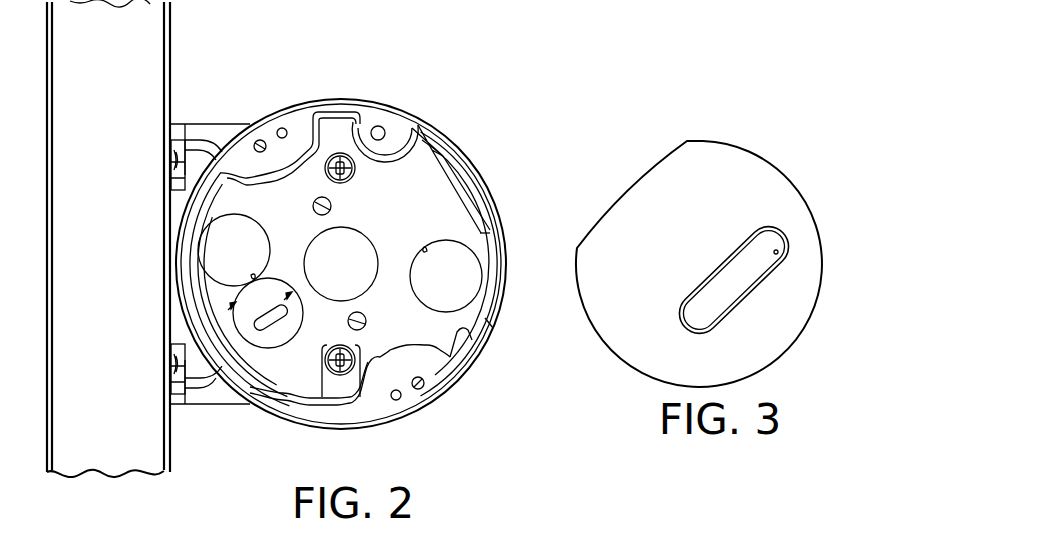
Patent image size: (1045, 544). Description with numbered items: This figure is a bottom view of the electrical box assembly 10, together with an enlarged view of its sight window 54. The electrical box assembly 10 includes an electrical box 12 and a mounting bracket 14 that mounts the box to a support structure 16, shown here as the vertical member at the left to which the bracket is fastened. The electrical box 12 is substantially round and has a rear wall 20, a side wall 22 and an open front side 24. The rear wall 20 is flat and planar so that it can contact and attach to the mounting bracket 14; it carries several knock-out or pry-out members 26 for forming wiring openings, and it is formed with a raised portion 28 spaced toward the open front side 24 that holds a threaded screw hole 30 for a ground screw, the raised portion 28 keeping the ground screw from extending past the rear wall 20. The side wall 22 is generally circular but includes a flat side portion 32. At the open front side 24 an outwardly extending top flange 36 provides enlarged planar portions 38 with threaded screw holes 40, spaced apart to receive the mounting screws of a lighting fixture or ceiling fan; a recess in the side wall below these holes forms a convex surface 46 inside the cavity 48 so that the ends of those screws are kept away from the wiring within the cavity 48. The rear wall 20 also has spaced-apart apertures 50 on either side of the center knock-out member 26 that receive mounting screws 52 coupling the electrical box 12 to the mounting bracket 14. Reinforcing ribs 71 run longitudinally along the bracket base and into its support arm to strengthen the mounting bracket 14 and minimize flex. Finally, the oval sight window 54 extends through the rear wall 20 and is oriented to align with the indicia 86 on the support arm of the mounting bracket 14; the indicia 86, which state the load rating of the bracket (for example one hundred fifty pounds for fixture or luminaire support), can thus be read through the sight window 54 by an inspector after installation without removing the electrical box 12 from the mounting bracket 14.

In FIG. 2, the electrical box assembly 10 is at (400, 90).
In FIG. 2, the electrical box 12 is at (447, 134).
In FIG. 2, the mounting bracket 14 is at (210, 408).
In FIG. 2, the support structure 16 is at (138, 42).
In FIG. 2, the rear wall 20 is at (430, 182).
In FIG. 3, the rear wall 20 is at (707, 148).
In FIG. 2, the side wall 22 is at (494, 327).
In FIG. 2, the open front side 24 is at (452, 360).
In FIG. 2, the knock-out or pry-out members 26 is at (238, 232).
In FIG. 2, the raised portion 28 is at (400, 133).
In FIG. 2, the threaded screw hole 30 is at (378, 126).
In FIG. 2, the flat side portion 32 is at (460, 178).
In FIG. 2, the top flange 36 is at (505, 243).
In FIG. 2, the enlarged planar portions 38 is at (283, 118).
In FIG. 2, the threaded screw holes 40 is at (259, 140).
In FIG. 2, the convex surface 46 is at (307, 163).
In FIG. 2, the cavity 48 is at (318, 380).
In FIG. 2, the apertures 50 is at (333, 210).
In FIG. 2, the mounting screws 52 is at (339, 122).
In FIG. 2, the sight window 54 is at (268, 329).
In FIG. 3, the sight window 54 is at (755, 302).
In FIG. 2, the reinforcing ribs 71 is at (185, 150).
In FIG. 3, the indicia 86 is at (770, 240).